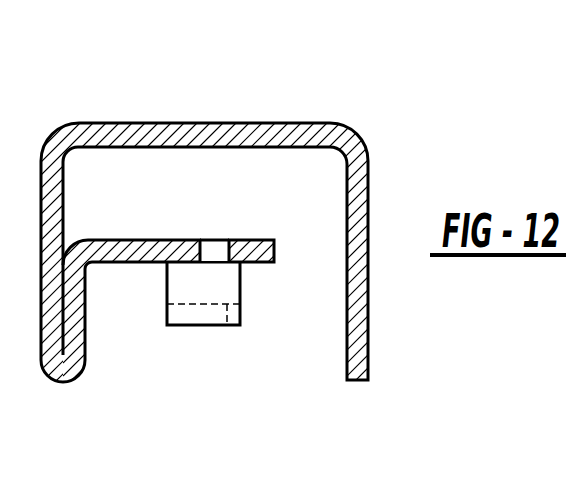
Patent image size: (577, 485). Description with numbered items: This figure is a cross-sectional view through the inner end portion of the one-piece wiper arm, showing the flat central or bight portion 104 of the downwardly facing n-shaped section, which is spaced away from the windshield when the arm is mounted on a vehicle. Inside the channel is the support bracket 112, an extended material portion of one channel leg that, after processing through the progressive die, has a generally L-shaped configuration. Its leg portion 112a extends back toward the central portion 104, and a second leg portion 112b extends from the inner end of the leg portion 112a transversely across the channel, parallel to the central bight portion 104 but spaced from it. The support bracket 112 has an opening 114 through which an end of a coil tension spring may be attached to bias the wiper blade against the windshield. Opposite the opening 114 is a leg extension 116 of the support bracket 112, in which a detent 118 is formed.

The central or bight portion 104 is at (153, 123).
The support bracket 112 is at (172, 346).
The leg portion 112a is at (86, 318).
The second leg portion 112b is at (258, 240).
The opening 114 is at (212, 252).
The leg extension 116 is at (240, 283).
The detent 118 is at (232, 325).